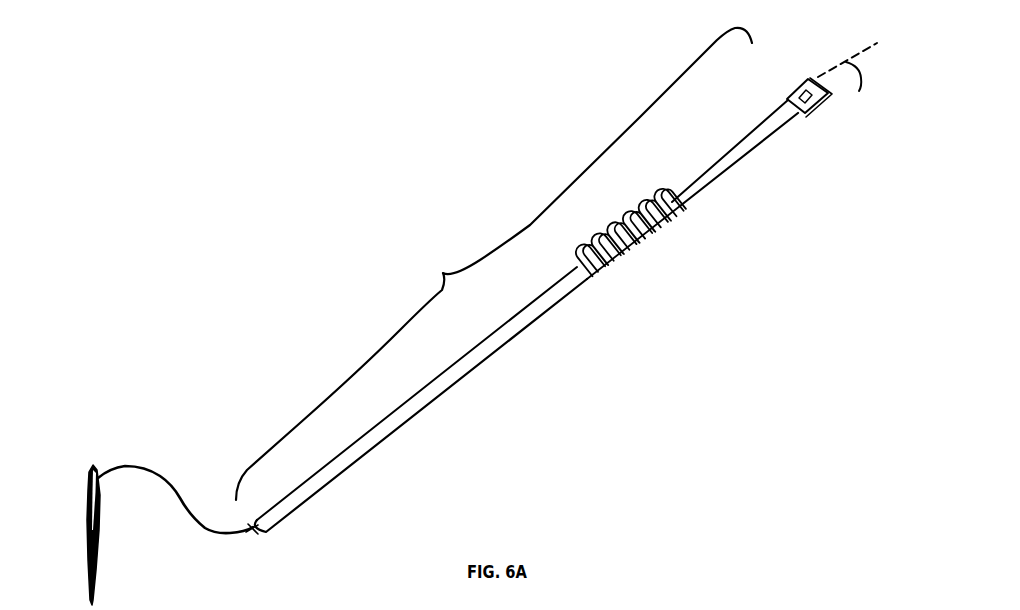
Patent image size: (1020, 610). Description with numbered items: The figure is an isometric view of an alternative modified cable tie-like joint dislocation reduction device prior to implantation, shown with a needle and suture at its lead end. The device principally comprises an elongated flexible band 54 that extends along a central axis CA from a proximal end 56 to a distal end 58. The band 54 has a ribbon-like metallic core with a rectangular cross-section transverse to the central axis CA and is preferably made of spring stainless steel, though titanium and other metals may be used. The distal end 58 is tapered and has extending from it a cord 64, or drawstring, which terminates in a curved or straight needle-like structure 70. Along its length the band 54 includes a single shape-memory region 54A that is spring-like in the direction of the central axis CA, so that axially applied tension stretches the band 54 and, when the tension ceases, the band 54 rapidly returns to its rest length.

The elongated flexible band 54 is at (517, 280).
The shape-memory region 54A is at (708, 208).
The proximal end 56 is at (824, 132).
The distal end 58 is at (269, 554).
The cord 64 is at (167, 480).
The needle-like structure 70 is at (90, 527).
The central axis CA is at (855, 84).